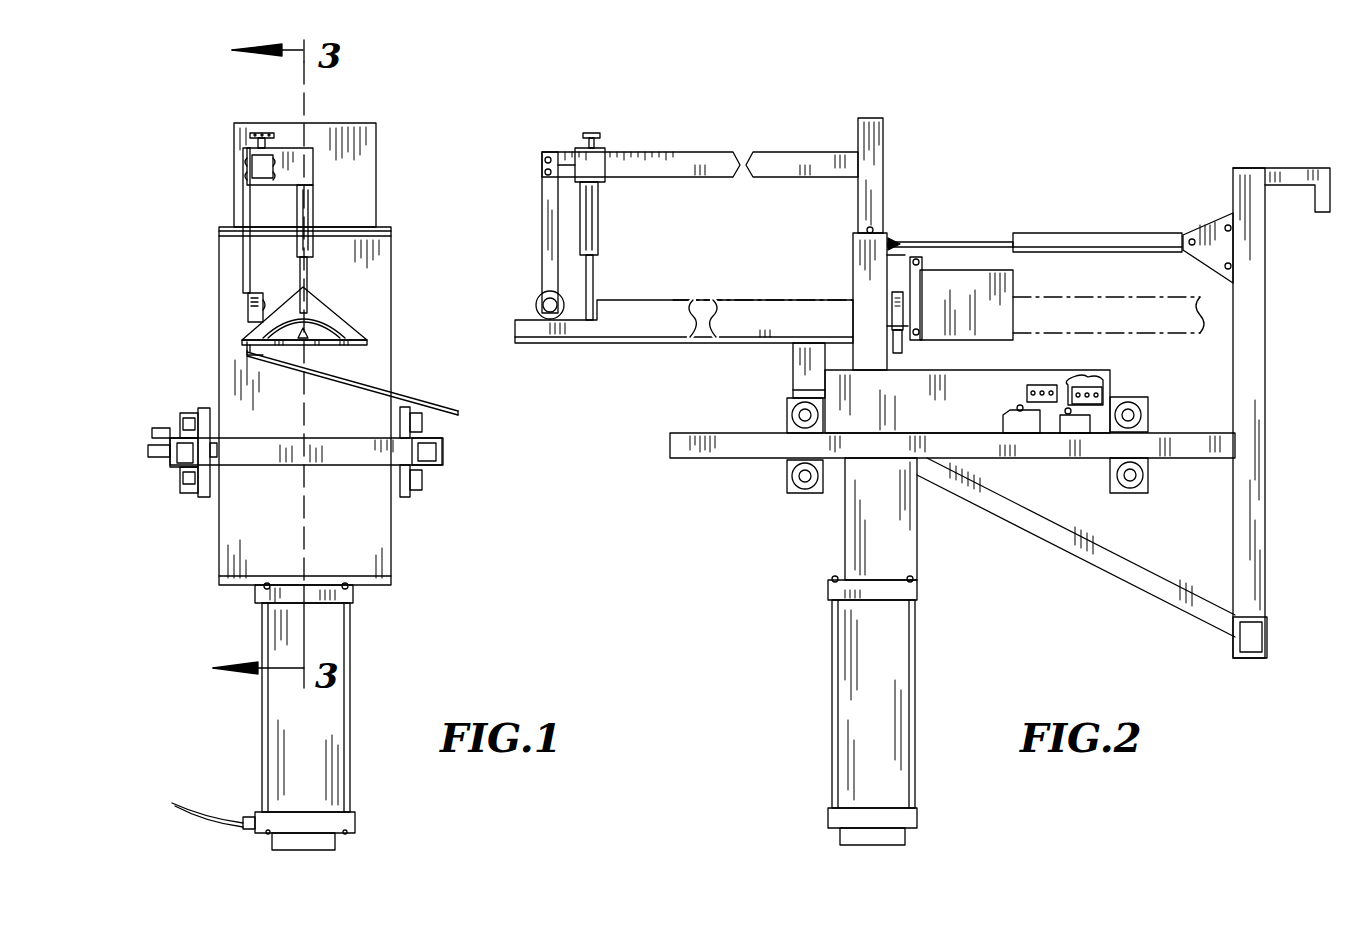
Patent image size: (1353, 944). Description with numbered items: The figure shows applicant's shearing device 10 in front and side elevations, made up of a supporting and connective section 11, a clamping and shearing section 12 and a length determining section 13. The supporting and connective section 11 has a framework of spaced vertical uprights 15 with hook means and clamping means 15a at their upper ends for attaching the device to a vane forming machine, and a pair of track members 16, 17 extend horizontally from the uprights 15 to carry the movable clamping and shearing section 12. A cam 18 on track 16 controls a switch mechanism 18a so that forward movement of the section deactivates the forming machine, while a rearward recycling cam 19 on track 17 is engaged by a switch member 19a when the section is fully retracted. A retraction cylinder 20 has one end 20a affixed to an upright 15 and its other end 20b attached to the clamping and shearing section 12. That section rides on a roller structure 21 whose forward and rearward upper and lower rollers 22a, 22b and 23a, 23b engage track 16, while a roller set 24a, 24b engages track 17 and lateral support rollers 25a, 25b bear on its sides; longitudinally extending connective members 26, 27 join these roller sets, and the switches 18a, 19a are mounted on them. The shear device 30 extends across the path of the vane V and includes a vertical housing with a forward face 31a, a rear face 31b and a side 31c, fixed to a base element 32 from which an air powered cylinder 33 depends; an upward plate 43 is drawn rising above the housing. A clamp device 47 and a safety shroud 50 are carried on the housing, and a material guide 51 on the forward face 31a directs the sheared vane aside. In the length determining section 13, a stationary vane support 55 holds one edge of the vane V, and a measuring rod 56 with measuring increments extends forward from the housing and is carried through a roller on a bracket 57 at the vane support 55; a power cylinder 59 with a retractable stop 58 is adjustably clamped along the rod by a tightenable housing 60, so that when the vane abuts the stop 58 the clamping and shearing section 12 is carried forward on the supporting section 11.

In FIG. 1, the shearing device 10 is at (412, 123).
In FIG. 2, the shearing device 10 is at (1000, 146).
In FIG. 1, the supporting and connective section 11 is at (470, 470).
In FIG. 2, the supporting and connective section 11 is at (1062, 556).
In FIG. 1, the clamping and shearing section 12 is at (418, 522).
In FIG. 2, the clamping and shearing section 12 is at (833, 262).
In FIG. 1, the length determining section 13 is at (218, 210).
In FIG. 2, the length determining section 13 is at (648, 124).
In FIG. 2, the vertical upright 15 is at (1267, 368).
In FIG. 2, the hook means and clamping means 15a is at (1268, 168).
In FIG. 1, the track member 16 is at (442, 438).
In FIG. 2, the track member 16 is at (745, 458).
In FIG. 1, the track member 17 is at (170, 467).
In FIG. 2, the cam 18 is at (1030, 420).
In FIG. 2, the switch mechanism 18a is at (1023, 393).
In FIG. 2, the recycling cam 19 is at (1070, 425).
In FIG. 2, the switch member 19a is at (1103, 385).
In FIG. 2, the retraction cylinder 20 is at (1067, 232).
In FIG. 2, the end of retraction cylinder 20a is at (1203, 228).
In FIG. 2, the other end of retraction cylinder 20b is at (950, 240).
In FIG. 2, the roller structure 21 is at (755, 520).
In FIG. 1, the forward upper roller member 22a is at (433, 428).
In FIG. 2, the forward upper roller member 22a is at (788, 418).
In FIG. 1, the forward lower roller member 22b is at (417, 490).
In FIG. 2, the forward lower roller member 22b is at (805, 490).
In FIG. 2, the rearward upper roller member 23a is at (1148, 398).
In FIG. 2, the rearward lower roller member 23b is at (1147, 480).
In FIG. 1, the upper roller set 24a is at (188, 413).
In FIG. 1, the lower roller set 24b is at (187, 495).
In FIG. 1, the lateral support roller 25a is at (148, 449).
In FIG. 1, the lateral support roller 25b is at (222, 450).
In FIG. 1, the longitudinally extending connective member 26 is at (423, 400).
In FIG. 2, the longitudinally extending connective member 26 is at (938, 421).
In FIG. 1, the longitudinally extending connective member 27 is at (205, 407).
In FIG. 1, the shear device 30 is at (410, 582).
In FIG. 2, the shear device 30 is at (820, 558).
In FIG. 1, the forward face of housing 31a is at (360, 535).
In FIG. 2, the forward face of housing 31a is at (852, 293).
In FIG. 2, the rear face of housing 31b is at (902, 245).
In FIG. 2, the side of housing 31c is at (870, 357).
In FIG. 1, the base element 32 is at (372, 587).
In FIG. 2, the base element 32 is at (913, 574).
In FIG. 1, the power cylinder 33 is at (327, 788).
In FIG. 2, the power cylinder 33 is at (905, 695).
In FIG. 1, the post / plate 43 is at (343, 123).
In FIG. 2, the post / plate 43 is at (870, 175).
In FIG. 2, the clamp device 47 is at (920, 265).
In FIG. 2, the safety shroud 50 is at (1013, 273).
In FIG. 1, the material guide 51 is at (360, 378).
In FIG. 2, the material guide 51 is at (793, 362).
In FIG. 1, the vane support 55 is at (250, 355).
In FIG. 2, the vane support 55 is at (613, 343).
In FIG. 1, the measuring rod 56 is at (251, 164).
In FIG. 2, the measuring rod 56 is at (682, 150).
In FIG. 1, the bracket 57 is at (242, 265).
In FIG. 2, the bracket 57 is at (542, 228).
In FIG. 1, the retractable stop 58 is at (310, 277).
In FIG. 2, the retractable stop 58 is at (593, 284).
In FIG. 1, the power cylinder 59 is at (315, 213).
In FIG. 2, the power cylinder 59 is at (600, 217).
In FIG. 1, the tightenable housing 60 is at (313, 165).
In FIG. 2, the tightenable housing 60 is at (590, 160).
In FIG. 1, the vane V is at (353, 322).
In FIG. 2, the vane V is at (750, 298).